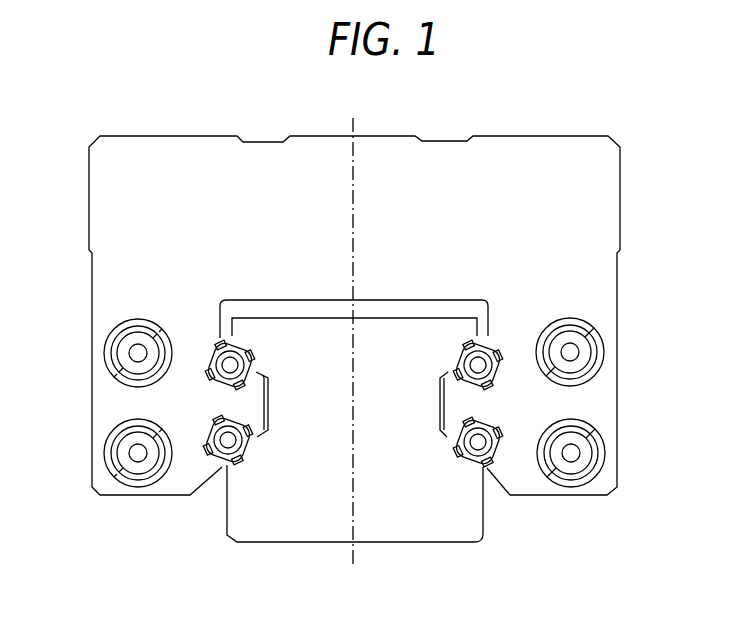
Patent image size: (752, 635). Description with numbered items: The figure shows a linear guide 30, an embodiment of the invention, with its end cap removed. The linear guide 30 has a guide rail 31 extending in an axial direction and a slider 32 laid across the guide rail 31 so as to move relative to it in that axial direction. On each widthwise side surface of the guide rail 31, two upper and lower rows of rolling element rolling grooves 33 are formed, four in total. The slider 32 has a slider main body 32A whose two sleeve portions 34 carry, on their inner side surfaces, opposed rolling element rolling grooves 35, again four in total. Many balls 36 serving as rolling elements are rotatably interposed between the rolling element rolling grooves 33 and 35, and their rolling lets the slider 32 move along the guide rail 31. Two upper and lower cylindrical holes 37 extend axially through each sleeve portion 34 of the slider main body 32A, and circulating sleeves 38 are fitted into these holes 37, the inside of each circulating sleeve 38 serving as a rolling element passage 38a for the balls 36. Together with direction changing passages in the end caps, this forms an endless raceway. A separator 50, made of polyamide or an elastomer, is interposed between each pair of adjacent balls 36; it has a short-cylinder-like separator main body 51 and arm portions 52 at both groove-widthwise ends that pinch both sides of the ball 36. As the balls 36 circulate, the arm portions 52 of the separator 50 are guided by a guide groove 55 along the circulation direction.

The linear guide 30 is at (398, 288).
The slider 32 is at (628, 208).
The slider main body 32A is at (588, 273).
The guide rail 31 is at (392, 527).
The rolling element rolling groove 33 is at (268, 345).
The sleeve portion 34 is at (608, 378).
The rolling element rolling groove 35 is at (212, 378).
The ball 36 is at (258, 343).
The cylindrical hole 37 is at (588, 330).
The circulating sleeve 38 is at (598, 348).
The rolling element passage 38a is at (573, 385).
The separator 50 is at (573, 462).
The separator main body 51 is at (584, 458).
The arm portion 52 is at (598, 435).
The guide groove 55 is at (555, 480).